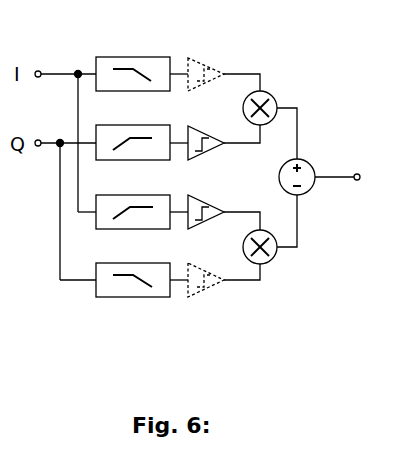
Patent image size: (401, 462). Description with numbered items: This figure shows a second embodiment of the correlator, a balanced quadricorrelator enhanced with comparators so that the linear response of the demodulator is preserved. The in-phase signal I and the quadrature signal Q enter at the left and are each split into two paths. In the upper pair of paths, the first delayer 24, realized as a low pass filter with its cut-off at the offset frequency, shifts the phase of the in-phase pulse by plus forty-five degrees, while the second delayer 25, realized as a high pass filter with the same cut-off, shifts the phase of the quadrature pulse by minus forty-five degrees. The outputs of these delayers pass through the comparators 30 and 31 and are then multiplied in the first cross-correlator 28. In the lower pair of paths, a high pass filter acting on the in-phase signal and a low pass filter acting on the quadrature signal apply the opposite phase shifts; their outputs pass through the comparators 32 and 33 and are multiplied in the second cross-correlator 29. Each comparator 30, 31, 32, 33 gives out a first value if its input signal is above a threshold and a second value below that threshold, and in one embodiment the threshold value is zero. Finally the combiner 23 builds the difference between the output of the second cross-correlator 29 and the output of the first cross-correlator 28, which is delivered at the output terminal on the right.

The combiner 23 is at (309, 191).
The first delayer 24 is at (170, 91).
The second delayer 25 is at (158, 125).
The first cross-correlator 28 is at (278, 104).
The second cross-correlator 29 is at (277, 253).
The comparator 30 is at (190, 57).
The comparator 31 is at (205, 131).
The comparator 32 is at (210, 204).
The comparator 33 is at (193, 298).